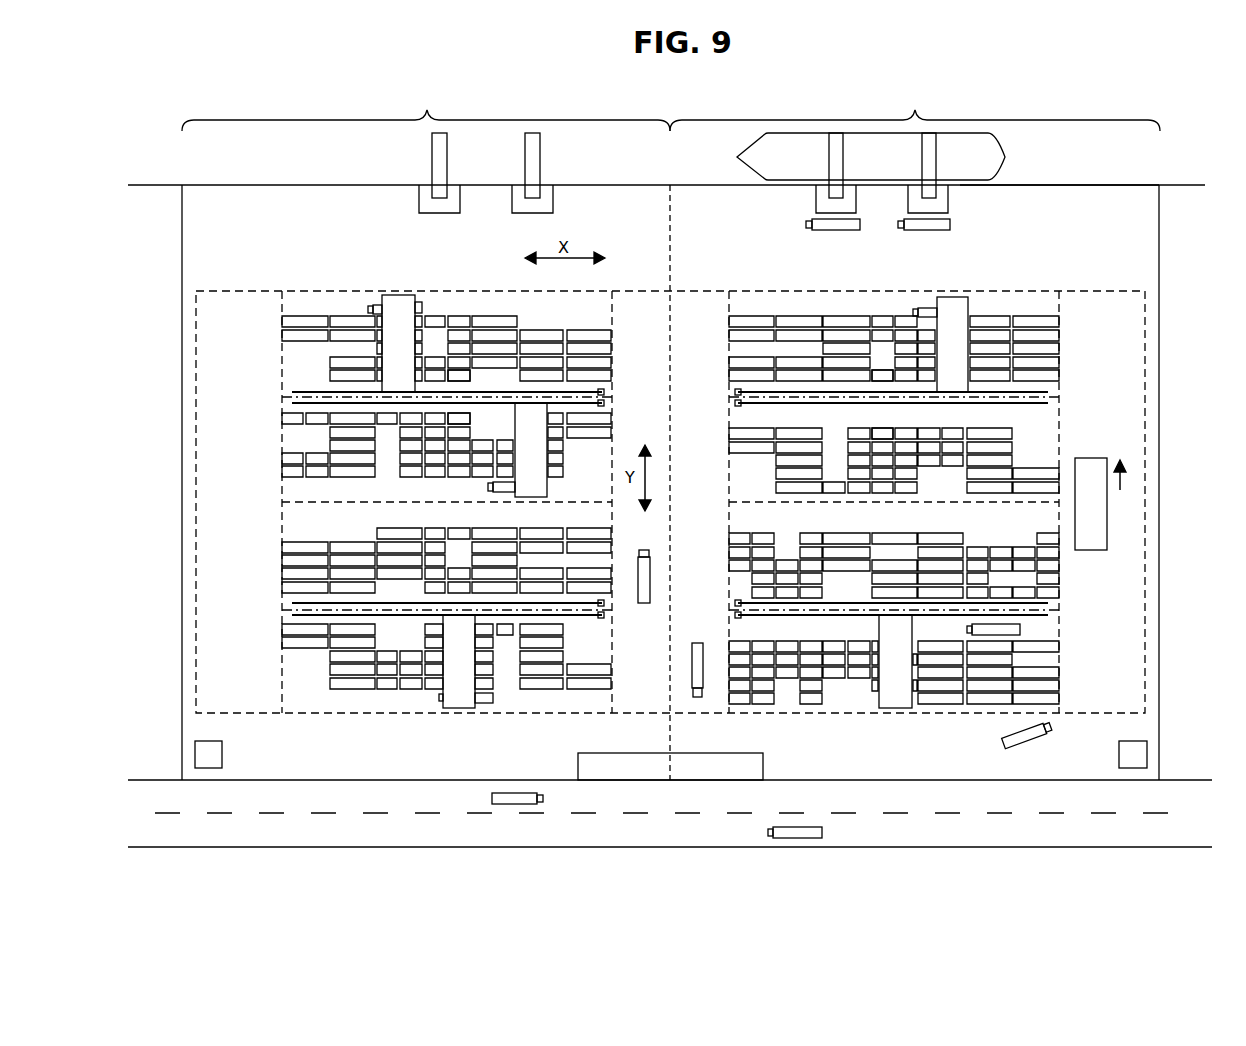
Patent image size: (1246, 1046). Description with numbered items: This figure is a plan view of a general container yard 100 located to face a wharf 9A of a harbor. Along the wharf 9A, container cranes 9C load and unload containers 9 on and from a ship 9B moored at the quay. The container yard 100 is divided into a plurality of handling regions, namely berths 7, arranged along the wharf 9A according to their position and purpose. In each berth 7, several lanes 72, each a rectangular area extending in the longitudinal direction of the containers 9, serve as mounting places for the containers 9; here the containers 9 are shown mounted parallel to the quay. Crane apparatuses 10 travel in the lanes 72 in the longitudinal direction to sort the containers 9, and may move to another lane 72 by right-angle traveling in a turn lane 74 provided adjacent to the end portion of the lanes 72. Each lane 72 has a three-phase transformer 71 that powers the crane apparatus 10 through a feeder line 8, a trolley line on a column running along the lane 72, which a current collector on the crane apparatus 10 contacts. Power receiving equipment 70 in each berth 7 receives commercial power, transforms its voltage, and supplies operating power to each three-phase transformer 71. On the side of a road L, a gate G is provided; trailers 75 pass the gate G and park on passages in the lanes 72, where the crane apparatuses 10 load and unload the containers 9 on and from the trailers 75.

The container yard 100 is at (1185, 131).
The berth 7 is at (671, 147).
The ship 9B is at (1008, 157).
The container crane 9C is at (816, 208).
The wharf 9A is at (1056, 186).
The trailer 75 is at (422, 302).
The crane apparatus 10 is at (399, 300).
The turn lane 74 is at (230, 291).
The lane 72 is at (282, 350).
The three-phase transformer 71 is at (605, 391).
The container 9 is at (547, 328).
The feeder line 8 is at (457, 390).
The power receiving equipment 70 is at (222, 752).
The gate G is at (764, 760).
The road L is at (1172, 788).